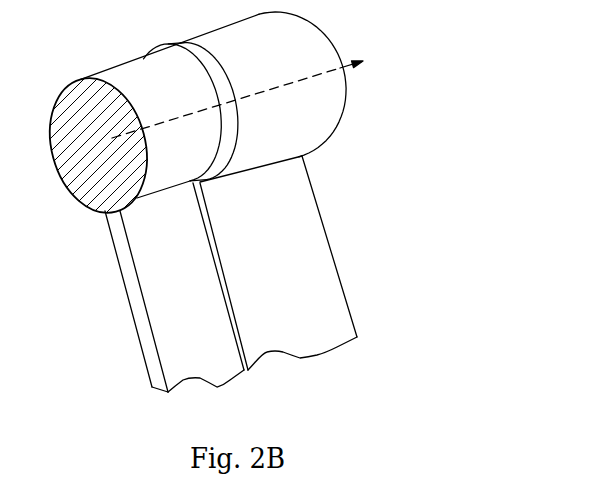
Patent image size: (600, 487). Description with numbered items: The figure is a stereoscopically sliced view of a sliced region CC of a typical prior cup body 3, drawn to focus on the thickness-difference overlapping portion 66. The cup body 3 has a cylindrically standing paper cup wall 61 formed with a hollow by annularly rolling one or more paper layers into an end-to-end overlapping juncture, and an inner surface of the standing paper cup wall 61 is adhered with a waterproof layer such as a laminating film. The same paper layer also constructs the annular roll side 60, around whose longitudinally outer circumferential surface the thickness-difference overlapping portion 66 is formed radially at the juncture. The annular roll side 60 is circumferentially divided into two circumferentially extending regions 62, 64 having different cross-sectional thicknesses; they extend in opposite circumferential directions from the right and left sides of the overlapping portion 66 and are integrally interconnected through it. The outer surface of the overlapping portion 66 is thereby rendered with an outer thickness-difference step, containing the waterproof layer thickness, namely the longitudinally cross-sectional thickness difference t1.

The cup body 3 is at (79, 55).
The annular roll side 60 is at (300, 119).
The standing paper cup wall 61 is at (265, 270).
The circumferentially extending region 62 is at (89, 144).
The circumferentially extending region 64 is at (367, 56).
The thickness-difference overlapping portion 66 is at (187, 53).
The longitudinally cross-sectional thickness difference t1 is at (187, 82).
The sliced region CC is at (127, 305).